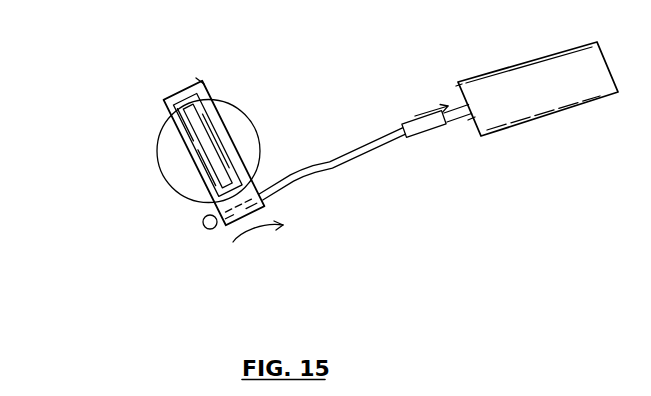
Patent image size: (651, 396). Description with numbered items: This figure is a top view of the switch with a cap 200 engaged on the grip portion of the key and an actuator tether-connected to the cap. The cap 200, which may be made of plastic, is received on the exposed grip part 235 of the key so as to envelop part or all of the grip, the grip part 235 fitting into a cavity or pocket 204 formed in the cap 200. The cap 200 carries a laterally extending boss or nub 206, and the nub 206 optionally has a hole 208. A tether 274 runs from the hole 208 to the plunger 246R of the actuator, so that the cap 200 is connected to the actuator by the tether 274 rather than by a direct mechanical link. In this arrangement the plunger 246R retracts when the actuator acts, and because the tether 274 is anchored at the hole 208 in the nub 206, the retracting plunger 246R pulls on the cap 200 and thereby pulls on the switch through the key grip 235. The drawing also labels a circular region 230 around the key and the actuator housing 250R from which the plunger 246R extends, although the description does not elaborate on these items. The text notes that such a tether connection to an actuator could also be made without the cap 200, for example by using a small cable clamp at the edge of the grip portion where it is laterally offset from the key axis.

The cap 200 is at (215, 100).
The cavity or pocket 204 is at (199, 82).
The boss or nub 206 is at (233, 242).
The hole 208 is at (262, 206).
The circular region 230 is at (157, 149).
The grip part of the key 235 is at (205, 167).
The plunger 246R is at (443, 123).
The housing 250R is at (523, 64).
The tether 274 is at (327, 168).